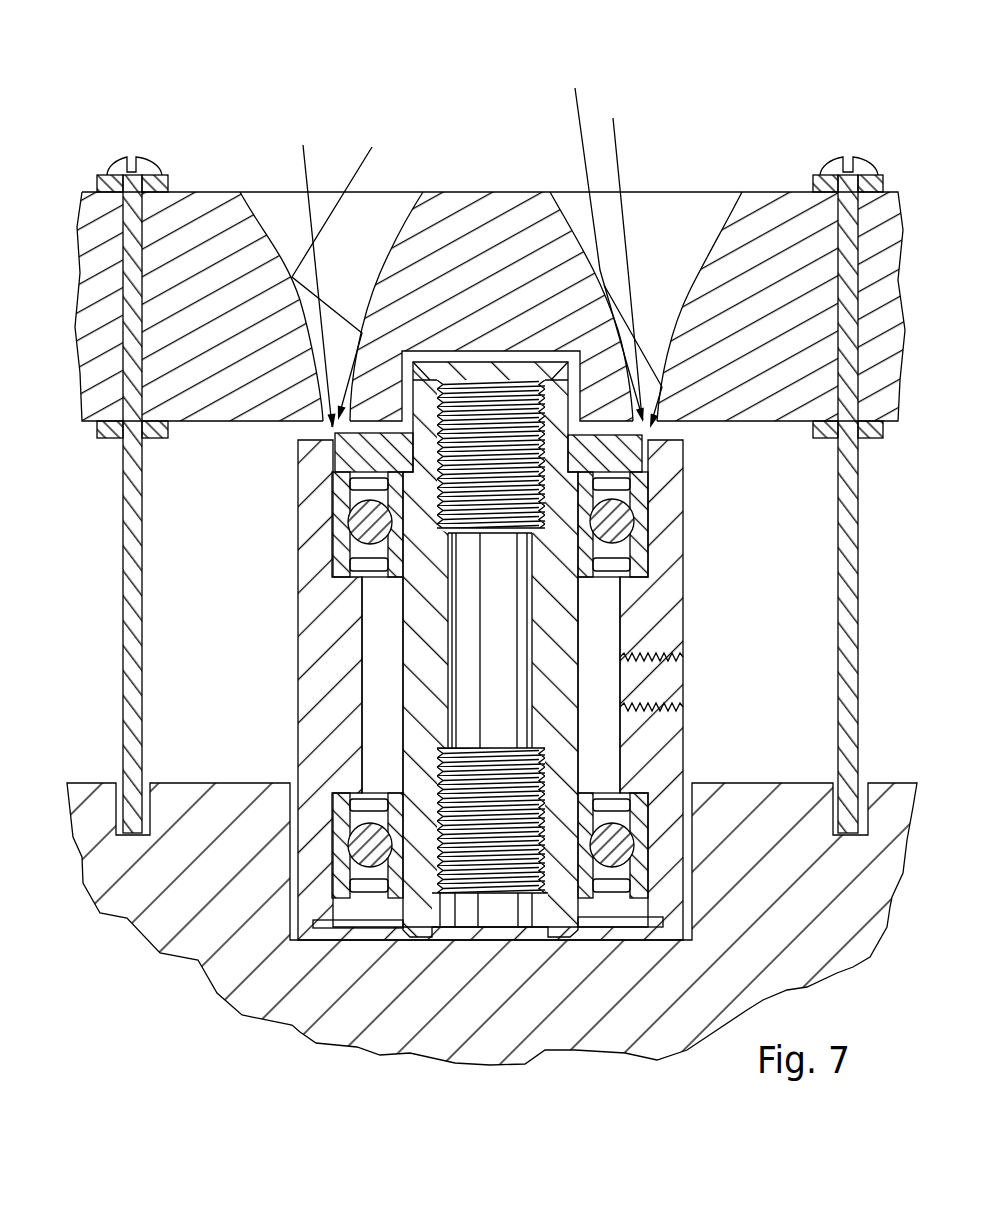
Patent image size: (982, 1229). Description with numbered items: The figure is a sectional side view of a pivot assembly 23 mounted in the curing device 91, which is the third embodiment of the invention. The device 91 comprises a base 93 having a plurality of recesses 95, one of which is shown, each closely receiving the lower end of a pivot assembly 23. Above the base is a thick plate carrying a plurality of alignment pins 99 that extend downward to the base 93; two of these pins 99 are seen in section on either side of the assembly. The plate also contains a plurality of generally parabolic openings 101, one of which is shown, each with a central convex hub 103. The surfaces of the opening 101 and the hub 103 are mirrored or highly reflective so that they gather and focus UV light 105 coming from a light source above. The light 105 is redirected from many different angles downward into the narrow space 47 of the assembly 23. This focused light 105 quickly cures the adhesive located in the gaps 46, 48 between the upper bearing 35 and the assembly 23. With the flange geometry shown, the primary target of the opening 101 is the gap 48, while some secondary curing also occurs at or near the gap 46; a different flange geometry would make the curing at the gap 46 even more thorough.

The device 91 is at (246, 95).
The generally parabolic opening 101 is at (264, 218).
The central convex hub 103 is at (402, 229).
The UV light 105 is at (303, 153).
The alignment pin 99 is at (143, 628).
The base 93 is at (720, 782).
The pivot assembly 23 is at (270, 471).
The recess 95 is at (296, 802).
The narrow space 47 is at (647, 445).
The gap 48 is at (323, 512).
The upper bearing 35 is at (623, 517).
The gap 46 is at (400, 603).